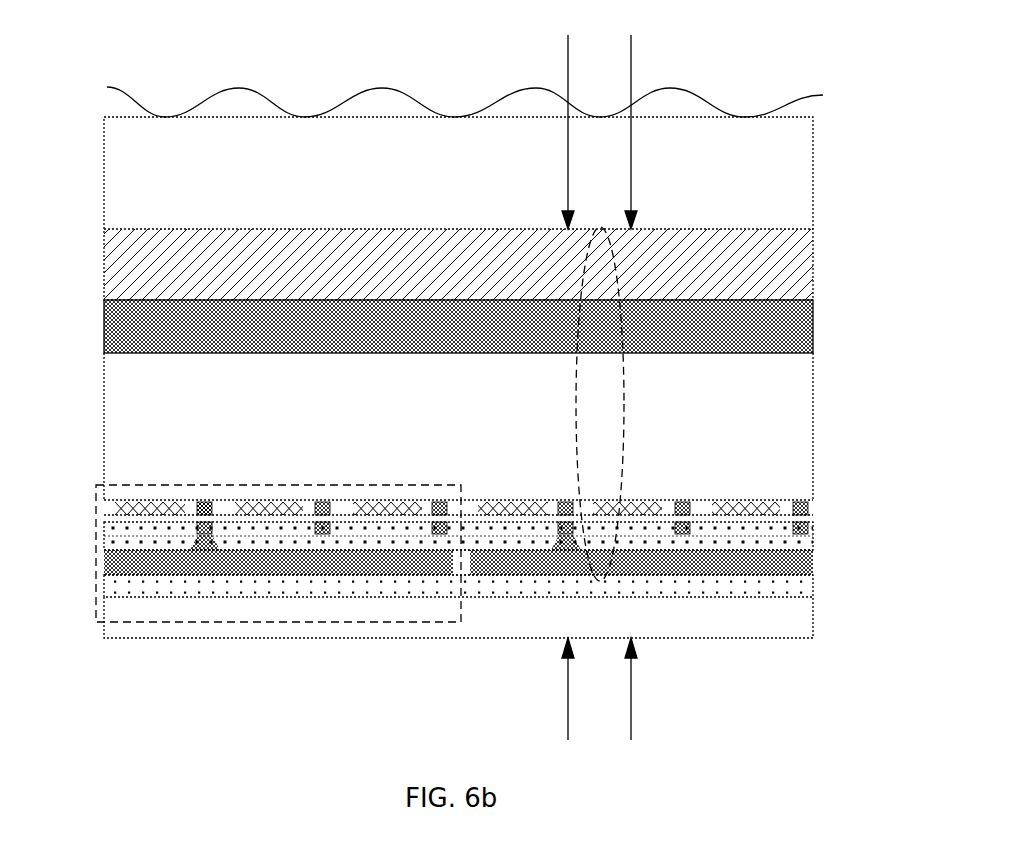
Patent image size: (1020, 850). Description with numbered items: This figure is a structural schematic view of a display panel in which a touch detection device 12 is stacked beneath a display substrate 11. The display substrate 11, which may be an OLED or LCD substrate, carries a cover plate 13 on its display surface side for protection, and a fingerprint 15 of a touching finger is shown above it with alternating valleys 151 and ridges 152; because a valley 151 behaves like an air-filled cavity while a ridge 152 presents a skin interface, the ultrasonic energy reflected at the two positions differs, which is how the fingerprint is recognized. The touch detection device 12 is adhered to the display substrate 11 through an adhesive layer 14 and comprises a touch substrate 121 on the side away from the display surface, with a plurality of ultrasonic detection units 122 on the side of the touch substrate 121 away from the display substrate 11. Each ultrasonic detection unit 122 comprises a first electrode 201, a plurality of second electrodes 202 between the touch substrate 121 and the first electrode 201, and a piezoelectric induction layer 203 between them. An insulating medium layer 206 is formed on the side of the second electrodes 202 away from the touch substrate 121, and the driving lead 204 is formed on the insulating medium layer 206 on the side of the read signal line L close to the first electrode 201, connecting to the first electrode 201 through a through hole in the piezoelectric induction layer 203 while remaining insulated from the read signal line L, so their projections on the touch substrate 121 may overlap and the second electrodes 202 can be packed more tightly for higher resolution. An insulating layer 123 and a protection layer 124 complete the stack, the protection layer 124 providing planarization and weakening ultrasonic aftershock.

The display substrate 11 is at (790, 258).
The touch detection device 12 is at (97, 353).
The cover plate 13 is at (793, 173).
The adhesive layer 14 is at (790, 322).
The fingerprint 15 is at (805, 101).
The valley 151 is at (672, 90).
The ridge 152 is at (465, 118).
The touch substrate 121 is at (790, 424).
The ultrasonic detection unit 122 is at (333, 622).
The insulating layer 123 is at (807, 587).
The protection layer 124 is at (775, 627).
The first electrode 201 is at (797, 562).
The second electrode 202 is at (745, 505).
The piezoelectric induction layer 203 is at (798, 543).
The driving lead 204 is at (208, 523).
The insulating medium layer 206 is at (113, 512).
The read signal line L is at (205, 515).